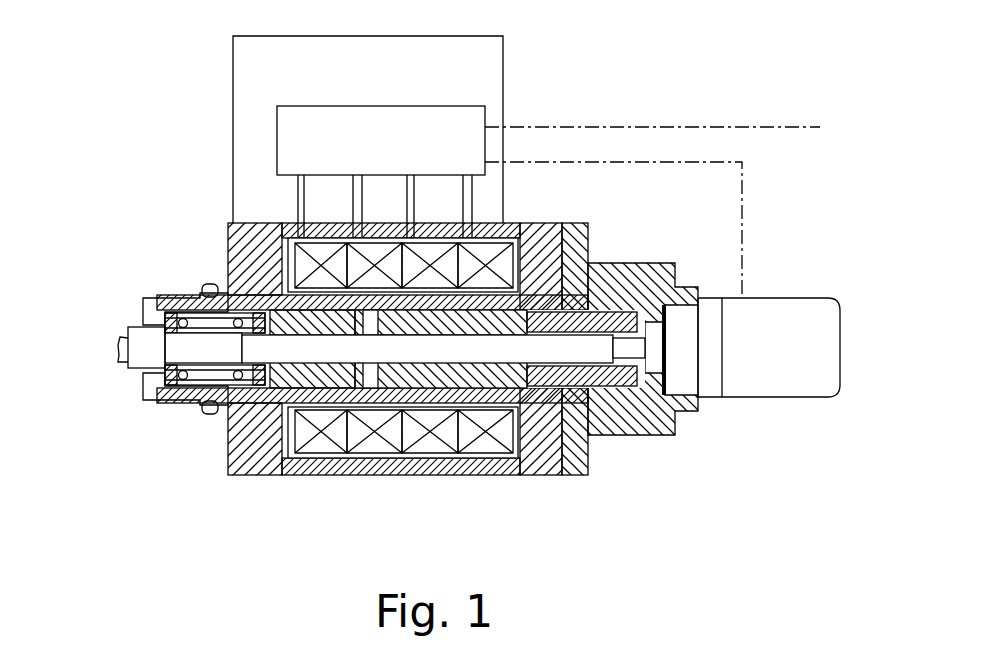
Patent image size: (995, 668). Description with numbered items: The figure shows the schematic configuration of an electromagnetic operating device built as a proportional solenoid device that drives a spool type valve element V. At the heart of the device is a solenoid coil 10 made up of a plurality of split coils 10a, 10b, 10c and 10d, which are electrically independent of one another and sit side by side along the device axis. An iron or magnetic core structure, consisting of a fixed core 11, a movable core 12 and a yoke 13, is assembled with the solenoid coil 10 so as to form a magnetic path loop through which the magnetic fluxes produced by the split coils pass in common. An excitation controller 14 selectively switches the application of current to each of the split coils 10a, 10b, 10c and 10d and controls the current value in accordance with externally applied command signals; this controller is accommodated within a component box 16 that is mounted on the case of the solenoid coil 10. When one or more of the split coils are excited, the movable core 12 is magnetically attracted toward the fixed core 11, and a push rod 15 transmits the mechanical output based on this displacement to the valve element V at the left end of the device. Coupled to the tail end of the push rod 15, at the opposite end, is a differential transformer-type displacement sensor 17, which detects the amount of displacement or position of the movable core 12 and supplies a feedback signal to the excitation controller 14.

The solenoid coil 10 is at (416, 352).
The split coil 10a is at (323, 447).
The split coil 10b is at (372, 445).
The split coil 10c is at (428, 445).
The split coil 10d is at (482, 445).
The fixed core 11 is at (223, 420).
The movable core 12 is at (588, 243).
The yoke 13 is at (537, 460).
The excitation controller 14 is at (297, 128).
The push rod 15 is at (267, 352).
The component box 16 is at (233, 103).
The displacement sensor 17 is at (808, 322).
The valve element V is at (148, 350).